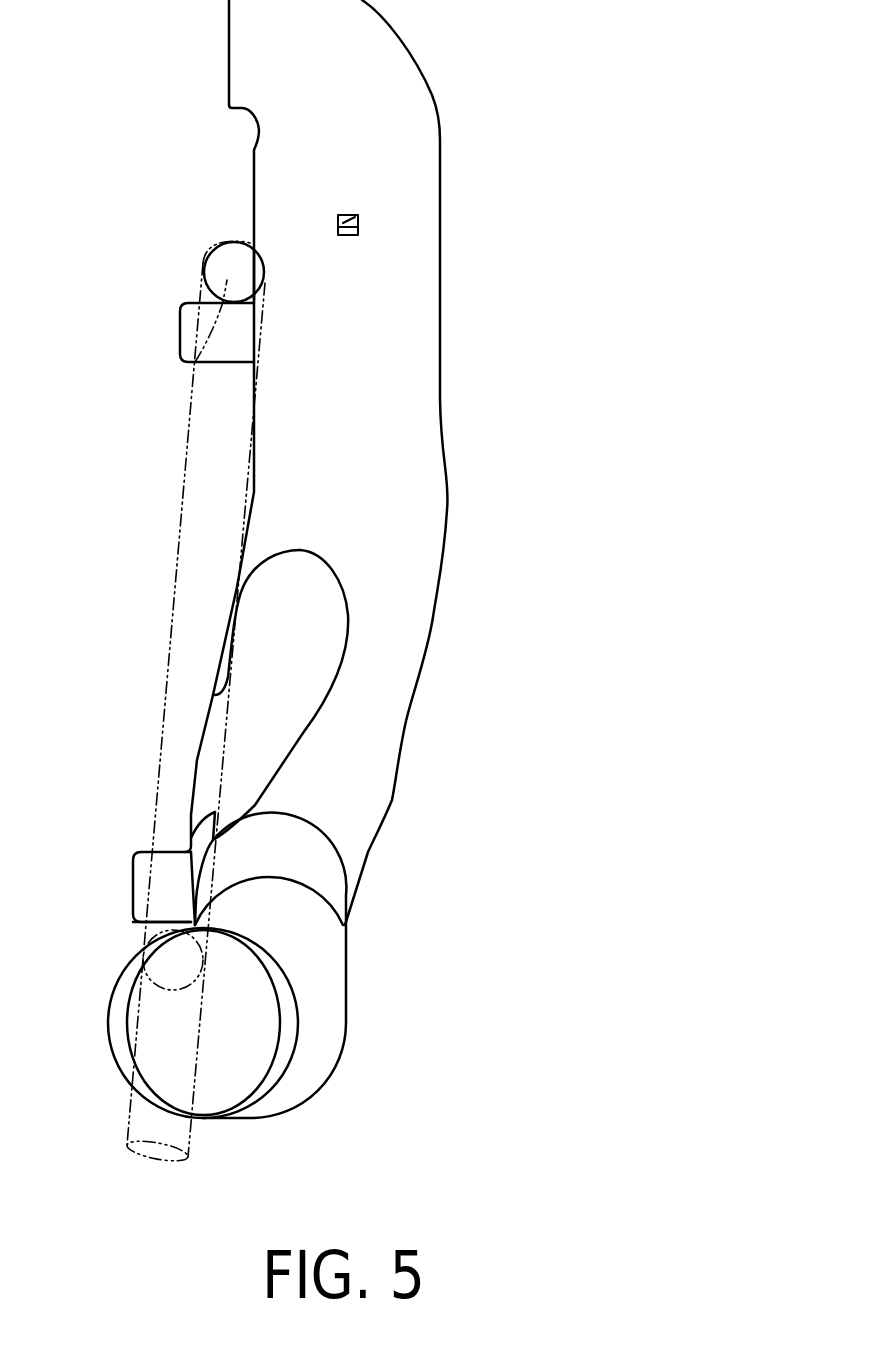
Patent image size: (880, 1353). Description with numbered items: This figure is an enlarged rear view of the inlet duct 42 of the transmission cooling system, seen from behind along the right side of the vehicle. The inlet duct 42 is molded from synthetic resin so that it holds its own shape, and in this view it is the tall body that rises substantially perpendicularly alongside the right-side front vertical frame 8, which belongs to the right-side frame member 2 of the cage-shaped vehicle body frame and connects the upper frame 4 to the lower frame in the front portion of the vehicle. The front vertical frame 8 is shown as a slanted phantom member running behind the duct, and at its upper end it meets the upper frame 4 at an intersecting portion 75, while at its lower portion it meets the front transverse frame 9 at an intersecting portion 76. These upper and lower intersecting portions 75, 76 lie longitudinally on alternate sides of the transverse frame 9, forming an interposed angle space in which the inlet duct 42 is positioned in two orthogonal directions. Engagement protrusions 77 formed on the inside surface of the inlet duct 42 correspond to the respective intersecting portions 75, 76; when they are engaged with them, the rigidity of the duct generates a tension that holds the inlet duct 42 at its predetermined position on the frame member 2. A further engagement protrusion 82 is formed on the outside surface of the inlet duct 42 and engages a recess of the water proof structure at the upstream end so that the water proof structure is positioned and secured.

The frame member 2 is at (183, 256).
The upper frame 4 is at (225, 242).
The front vertical frame 8 is at (173, 590).
The front transverse frame 9 is at (158, 984).
The inlet duct 42 is at (448, 290).
The intersecting portion 75 is at (196, 362).
The intersecting portion 76 is at (152, 930).
The engagement protrusion 77 is at (181, 333).
The engagement protrusion 82 is at (358, 216).